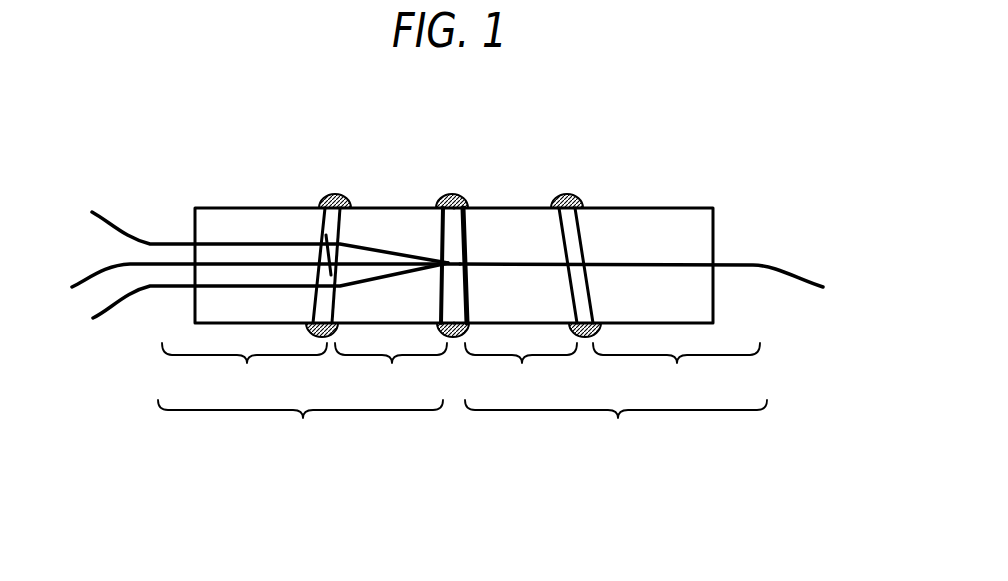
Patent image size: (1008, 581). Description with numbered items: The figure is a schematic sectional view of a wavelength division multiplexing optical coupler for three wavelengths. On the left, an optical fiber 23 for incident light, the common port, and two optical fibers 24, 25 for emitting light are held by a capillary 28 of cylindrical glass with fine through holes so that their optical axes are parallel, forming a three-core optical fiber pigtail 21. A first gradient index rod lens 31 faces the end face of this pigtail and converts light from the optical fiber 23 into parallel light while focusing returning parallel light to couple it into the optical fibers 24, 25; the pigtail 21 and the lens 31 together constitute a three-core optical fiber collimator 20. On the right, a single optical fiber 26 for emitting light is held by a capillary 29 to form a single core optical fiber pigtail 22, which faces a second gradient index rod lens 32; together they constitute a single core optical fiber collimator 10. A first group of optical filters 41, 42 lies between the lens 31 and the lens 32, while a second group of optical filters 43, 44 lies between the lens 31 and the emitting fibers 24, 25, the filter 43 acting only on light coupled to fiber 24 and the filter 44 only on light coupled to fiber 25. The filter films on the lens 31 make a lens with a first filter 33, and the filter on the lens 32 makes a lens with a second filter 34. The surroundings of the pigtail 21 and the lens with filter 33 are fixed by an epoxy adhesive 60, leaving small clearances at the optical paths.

The single core optical fiber collimator 10 is at (616, 426).
The three-core optical fiber collimator 20 is at (300, 426).
The three-core optical fiber pigtail 21 is at (244, 370).
The single core optical fiber pigtail 22 is at (676, 370).
The optical fiber for incident light 23 is at (148, 240).
The optical fiber for emitting light 24 is at (88, 272).
The optical fiber for emitting light 25 is at (147, 290).
The optical fiber for emitting light 26 is at (812, 268).
The capillary 28 is at (212, 218).
The capillary 29 is at (653, 222).
The first gradient index rod lens 31 is at (373, 217).
The second gradient index rod lens 32 is at (532, 222).
The lens with a first filter 33 is at (391, 370).
The lens with a second filter 34 is at (521, 370).
The optical filter 41 is at (440, 241).
The optical filter 42 is at (465, 241).
The optical filter 43 is at (327, 265).
The optical filter 44 is at (322, 250).
The epoxy adhesive 60 is at (335, 193).